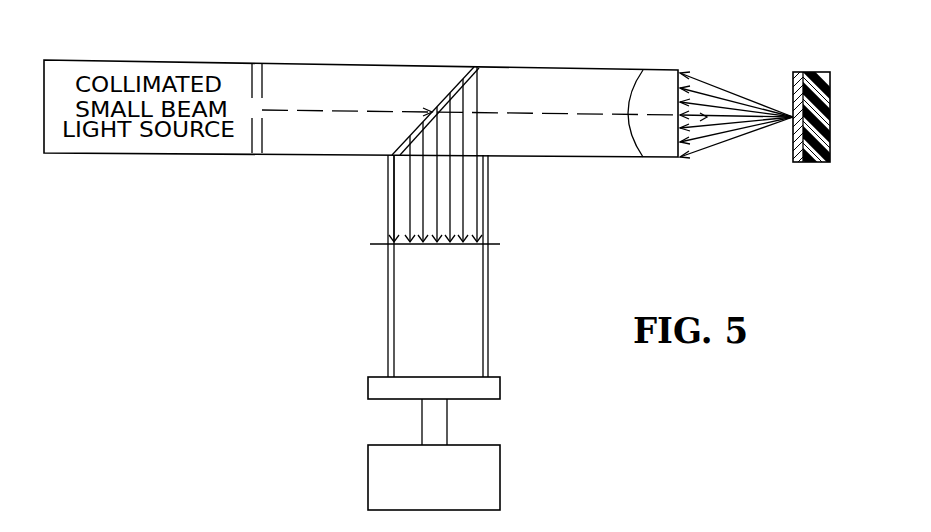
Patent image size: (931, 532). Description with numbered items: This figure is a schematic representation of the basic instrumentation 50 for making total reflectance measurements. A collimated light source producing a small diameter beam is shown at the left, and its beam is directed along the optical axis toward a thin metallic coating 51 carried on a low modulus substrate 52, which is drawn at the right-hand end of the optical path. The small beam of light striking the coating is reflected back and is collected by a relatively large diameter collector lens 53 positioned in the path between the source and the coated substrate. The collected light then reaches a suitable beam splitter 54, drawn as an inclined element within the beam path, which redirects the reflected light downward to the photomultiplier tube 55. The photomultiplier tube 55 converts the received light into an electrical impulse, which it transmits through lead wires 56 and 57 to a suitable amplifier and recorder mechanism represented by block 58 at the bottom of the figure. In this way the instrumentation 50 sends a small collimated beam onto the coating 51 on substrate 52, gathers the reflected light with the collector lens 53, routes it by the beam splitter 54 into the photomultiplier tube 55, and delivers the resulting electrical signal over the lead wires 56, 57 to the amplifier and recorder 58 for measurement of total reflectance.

The basic instrumentation for making total reflectance measurements 50 is at (286, 240).
The thin metallic coating 51 is at (800, 72).
The low modulus substrate 52 is at (822, 162).
The collector lens 53 is at (655, 157).
The beam splitter 54 is at (442, 100).
The photomultiplier tube 55 is at (400, 322).
The lead wire 56 is at (420, 428).
The lead wire 57 is at (448, 425).
The amplifier and recorder mechanism 58 is at (449, 492).